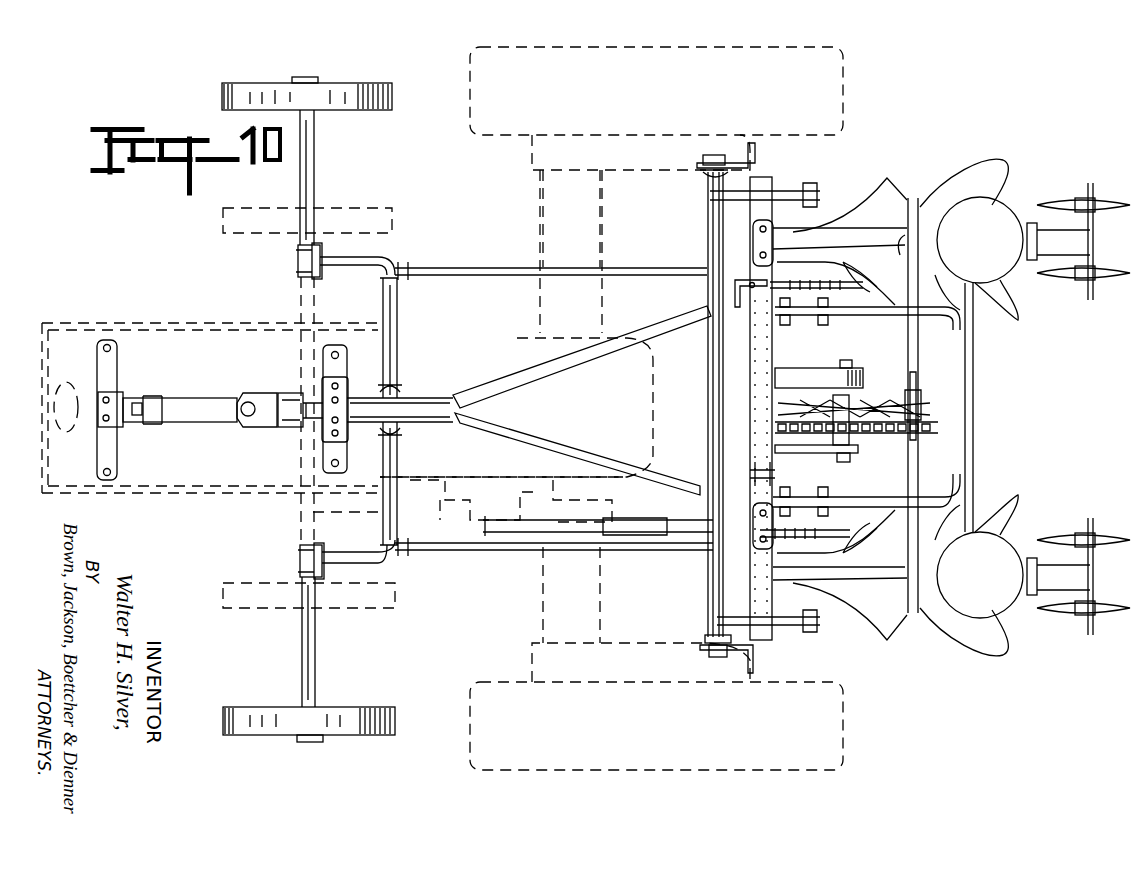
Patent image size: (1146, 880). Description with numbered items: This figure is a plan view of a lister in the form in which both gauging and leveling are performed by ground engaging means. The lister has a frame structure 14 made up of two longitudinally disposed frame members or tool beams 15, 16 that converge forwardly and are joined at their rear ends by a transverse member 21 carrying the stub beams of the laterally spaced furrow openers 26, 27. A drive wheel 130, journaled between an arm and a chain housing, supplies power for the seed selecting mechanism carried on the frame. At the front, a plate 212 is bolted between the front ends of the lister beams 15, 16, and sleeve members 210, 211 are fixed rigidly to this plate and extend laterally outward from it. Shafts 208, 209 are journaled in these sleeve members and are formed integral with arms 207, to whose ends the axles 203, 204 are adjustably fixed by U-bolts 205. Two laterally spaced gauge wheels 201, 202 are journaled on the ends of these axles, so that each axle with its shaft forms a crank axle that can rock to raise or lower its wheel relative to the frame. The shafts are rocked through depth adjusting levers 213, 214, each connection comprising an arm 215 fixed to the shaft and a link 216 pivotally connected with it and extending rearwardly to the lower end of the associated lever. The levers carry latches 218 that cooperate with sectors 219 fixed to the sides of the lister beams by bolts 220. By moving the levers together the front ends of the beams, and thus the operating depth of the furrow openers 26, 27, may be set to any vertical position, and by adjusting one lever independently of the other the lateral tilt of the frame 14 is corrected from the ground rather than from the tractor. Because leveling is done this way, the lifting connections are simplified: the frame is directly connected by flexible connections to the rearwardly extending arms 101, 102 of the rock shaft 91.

The frame structure 14 is at (982, 391).
The frame member 15 is at (522, 376).
The frame member 16 is at (526, 430).
The transverse member 21 is at (757, 343).
The furrow opener 26 is at (892, 200).
The furrow opener 27 is at (893, 613).
The rock shaft 91 is at (710, 382).
The arm 101 is at (737, 195).
The arm 102 is at (737, 617).
The drive wheel 130 is at (866, 402).
The gauge wheel 201 is at (357, 710).
The gauge wheel 202 is at (363, 95).
The axle 203 is at (315, 655).
The axle 204 is at (308, 185).
The U-bolt 205 is at (297, 263).
The arm 207 is at (345, 260).
The shaft 208 is at (383, 277).
The shaft 209 is at (382, 560).
The sleeve member 210 is at (392, 335).
The sleeve member 211 is at (393, 465).
The plate 212 is at (405, 408).
The depth adjusting lever 213 is at (735, 297).
The depth adjusting lever 214 is at (732, 500).
The arm 215 is at (405, 273).
The link 216 is at (643, 277).
The latch 218 is at (813, 290).
The sector 219 is at (843, 280).
The bolt 220 is at (787, 320).